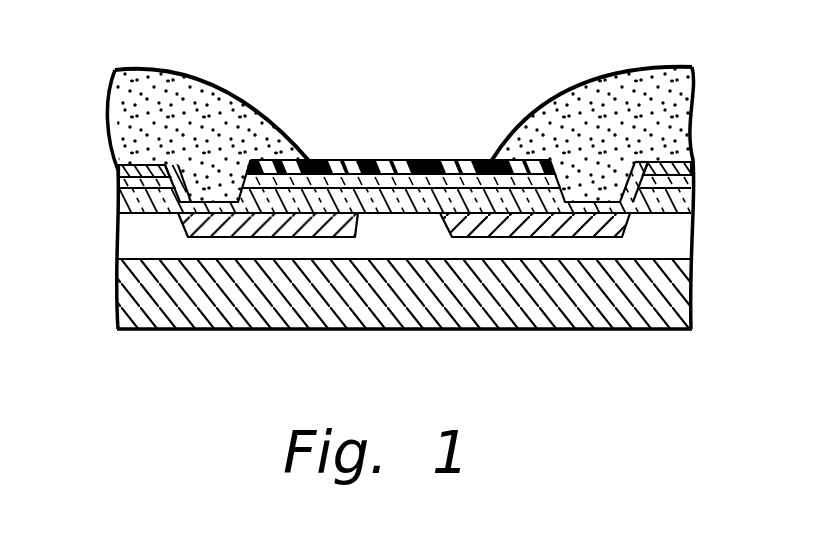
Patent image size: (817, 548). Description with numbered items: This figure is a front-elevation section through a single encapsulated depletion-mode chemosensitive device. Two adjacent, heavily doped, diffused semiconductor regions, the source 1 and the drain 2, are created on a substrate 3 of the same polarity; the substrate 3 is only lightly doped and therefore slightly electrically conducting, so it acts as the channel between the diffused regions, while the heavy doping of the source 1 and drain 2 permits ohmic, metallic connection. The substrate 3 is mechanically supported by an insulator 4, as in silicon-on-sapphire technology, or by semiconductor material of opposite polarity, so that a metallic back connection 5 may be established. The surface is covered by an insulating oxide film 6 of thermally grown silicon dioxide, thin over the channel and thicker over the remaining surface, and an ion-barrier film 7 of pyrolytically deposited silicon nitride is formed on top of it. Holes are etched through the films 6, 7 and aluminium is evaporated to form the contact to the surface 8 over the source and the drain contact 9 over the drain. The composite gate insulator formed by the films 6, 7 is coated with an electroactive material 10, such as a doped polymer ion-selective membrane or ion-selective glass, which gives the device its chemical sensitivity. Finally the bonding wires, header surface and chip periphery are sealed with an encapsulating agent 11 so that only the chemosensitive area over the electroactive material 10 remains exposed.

The source 1 is at (187, 227).
The drain 2 is at (605, 222).
The substrate 3 is at (127, 245).
The insulator 4 is at (682, 291).
The metallic back connection 5 is at (114, 327).
The insulating oxide film 6 is at (123, 203).
The ion-barrier film 7 is at (121, 184).
The contact to the surface 8 is at (120, 167).
The drain contact 9 is at (697, 168).
The electroactive material 10 is at (323, 160).
The encapsulating agent 11 is at (217, 100).